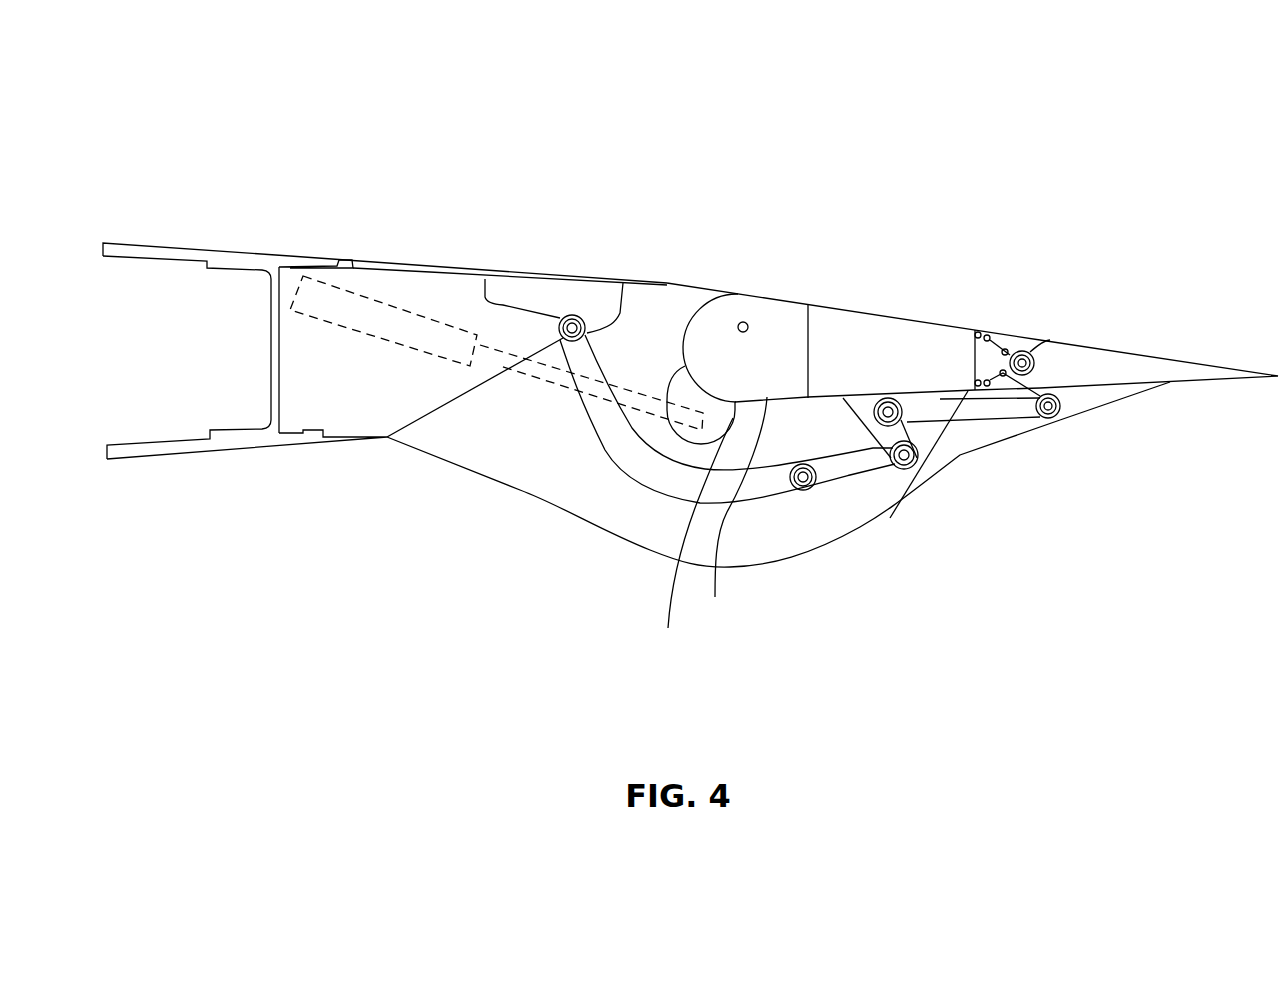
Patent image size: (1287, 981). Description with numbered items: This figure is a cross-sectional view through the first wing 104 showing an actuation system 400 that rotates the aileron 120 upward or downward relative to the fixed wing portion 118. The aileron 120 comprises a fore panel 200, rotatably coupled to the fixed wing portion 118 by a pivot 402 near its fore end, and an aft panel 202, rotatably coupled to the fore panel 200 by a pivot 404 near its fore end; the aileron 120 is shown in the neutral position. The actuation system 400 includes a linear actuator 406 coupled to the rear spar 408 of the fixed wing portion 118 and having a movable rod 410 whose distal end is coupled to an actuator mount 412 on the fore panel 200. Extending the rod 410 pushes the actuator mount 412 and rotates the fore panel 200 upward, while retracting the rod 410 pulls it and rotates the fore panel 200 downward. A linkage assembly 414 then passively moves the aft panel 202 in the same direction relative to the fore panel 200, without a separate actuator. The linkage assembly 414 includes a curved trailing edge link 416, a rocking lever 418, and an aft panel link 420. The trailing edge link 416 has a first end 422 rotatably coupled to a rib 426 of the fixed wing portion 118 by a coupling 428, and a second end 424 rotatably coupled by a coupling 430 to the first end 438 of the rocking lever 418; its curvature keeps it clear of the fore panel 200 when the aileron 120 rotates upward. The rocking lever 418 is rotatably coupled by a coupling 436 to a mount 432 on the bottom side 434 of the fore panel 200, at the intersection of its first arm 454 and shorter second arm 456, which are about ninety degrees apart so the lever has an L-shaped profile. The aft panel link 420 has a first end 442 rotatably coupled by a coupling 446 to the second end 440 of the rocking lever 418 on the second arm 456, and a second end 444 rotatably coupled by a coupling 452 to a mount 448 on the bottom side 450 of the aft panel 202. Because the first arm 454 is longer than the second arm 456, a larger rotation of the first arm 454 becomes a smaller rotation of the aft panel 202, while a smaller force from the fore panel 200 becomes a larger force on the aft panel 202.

The first wing 104 is at (185, 68).
The fixed wing portion 118 is at (241, 255).
The aileron 120 is at (778, 175).
The fore panel 200 is at (825, 305).
The aft panel 202 is at (1185, 360).
The actuation system 400 is at (573, 175).
The pivot 402 is at (741, 321).
The pivot 404 is at (1030, 352).
The actuator 406 is at (323, 305).
The rear spar 408 is at (271, 340).
The rod 410 is at (493, 366).
The actuator mount 412 is at (695, 474).
The linkage assembly 414 is at (625, 648).
The trailing edge link 416 is at (620, 432).
The rocking lever 418 is at (838, 470).
The aft panel link 420 is at (967, 417).
The first end 422 is at (620, 316).
The second end 424 is at (802, 492).
The rib 426 is at (383, 287).
The coupling 428 is at (567, 314).
The coupling 430 is at (726, 517).
The mount 432 is at (858, 405).
The bottom side 434 is at (690, 540).
The coupling 436 is at (897, 470).
The first end 438 is at (815, 491).
The second end 440 is at (888, 398).
The first end 442 is at (902, 400).
The second end 444 is at (1056, 393).
The coupling 446 is at (960, 456).
The mount 448 is at (1075, 397).
The bottom side 450 is at (1208, 380).
The coupling 452 is at (1055, 417).
The first arm 454 is at (850, 465).
The second arm 456 is at (912, 470).